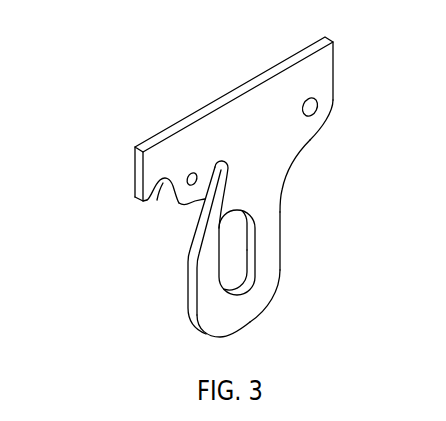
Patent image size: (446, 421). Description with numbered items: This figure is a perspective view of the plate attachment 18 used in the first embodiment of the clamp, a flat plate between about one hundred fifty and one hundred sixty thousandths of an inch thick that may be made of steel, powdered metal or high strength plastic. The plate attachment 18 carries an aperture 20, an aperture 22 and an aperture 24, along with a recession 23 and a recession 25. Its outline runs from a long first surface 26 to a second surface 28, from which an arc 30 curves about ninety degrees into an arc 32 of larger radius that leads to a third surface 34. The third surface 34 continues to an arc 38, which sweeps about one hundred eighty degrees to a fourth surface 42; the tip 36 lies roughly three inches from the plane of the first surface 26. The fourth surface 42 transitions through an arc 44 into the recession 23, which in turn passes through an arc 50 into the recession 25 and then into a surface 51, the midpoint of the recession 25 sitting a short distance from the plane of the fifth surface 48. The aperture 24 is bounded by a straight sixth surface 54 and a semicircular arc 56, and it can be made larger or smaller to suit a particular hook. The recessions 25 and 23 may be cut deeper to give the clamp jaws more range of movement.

The plate attachment 18 is at (112, 86).
The aperture 20 is at (317, 104).
The aperture 22 is at (198, 176).
The recession 23 is at (233, 172).
The aperture 24 is at (237, 251).
The recession 25 is at (166, 207).
The first surface 26 is at (275, 67).
The second surface 28 is at (336, 57).
The arc 30 is at (324, 124).
The arc 32 is at (301, 153).
The third surface 34 is at (282, 228).
The tip 36 is at (234, 338).
The arc 38 is at (274, 298).
The fourth surface 42 is at (193, 290).
The arc 44 is at (193, 237).
The fifth surface 48 is at (136, 172).
The arc 50 is at (183, 209).
The surface 51 is at (139, 203).
The sixth surface 54 is at (229, 279).
The arc 56 is at (259, 218).